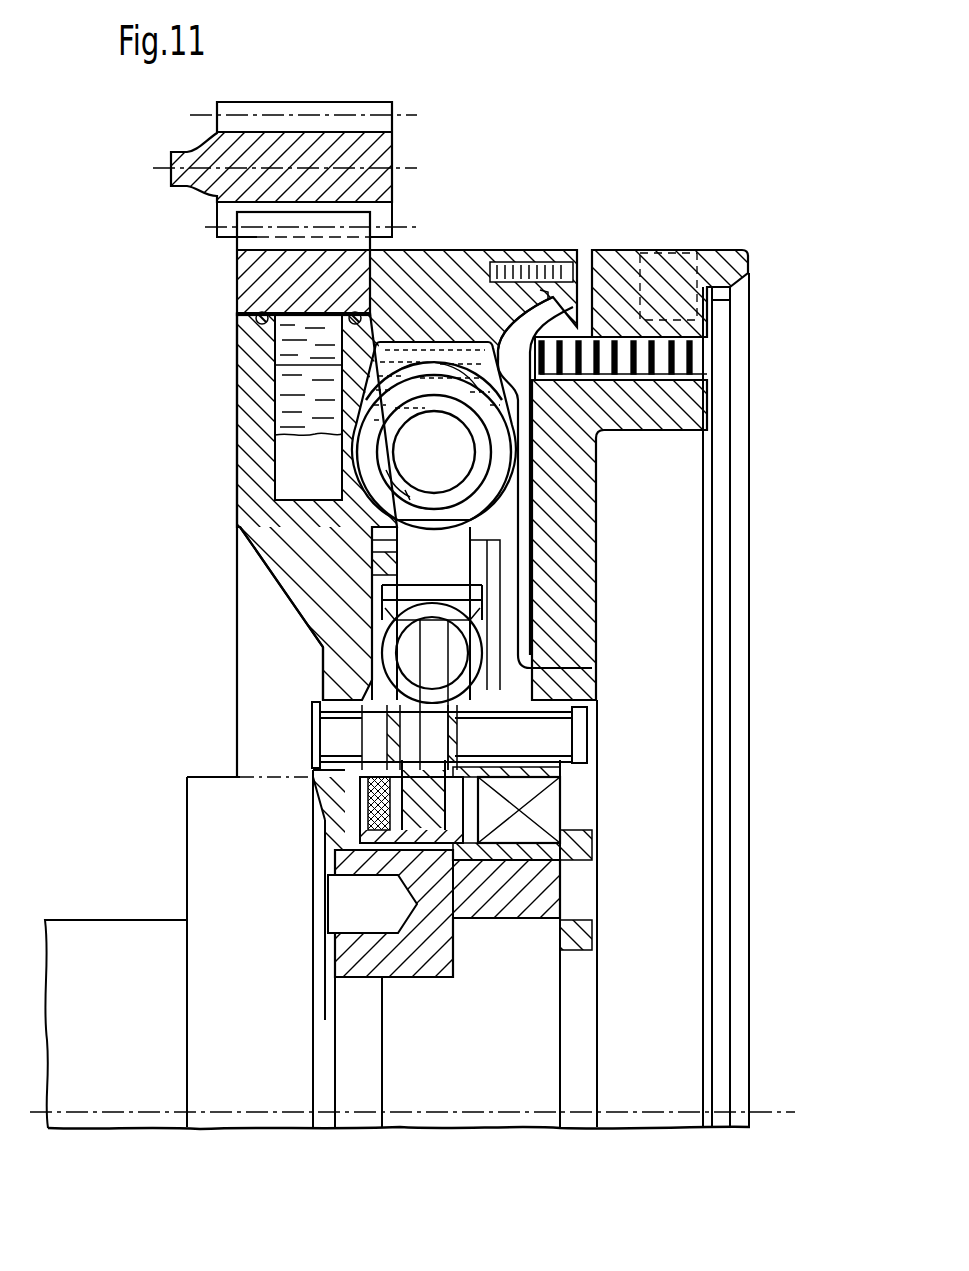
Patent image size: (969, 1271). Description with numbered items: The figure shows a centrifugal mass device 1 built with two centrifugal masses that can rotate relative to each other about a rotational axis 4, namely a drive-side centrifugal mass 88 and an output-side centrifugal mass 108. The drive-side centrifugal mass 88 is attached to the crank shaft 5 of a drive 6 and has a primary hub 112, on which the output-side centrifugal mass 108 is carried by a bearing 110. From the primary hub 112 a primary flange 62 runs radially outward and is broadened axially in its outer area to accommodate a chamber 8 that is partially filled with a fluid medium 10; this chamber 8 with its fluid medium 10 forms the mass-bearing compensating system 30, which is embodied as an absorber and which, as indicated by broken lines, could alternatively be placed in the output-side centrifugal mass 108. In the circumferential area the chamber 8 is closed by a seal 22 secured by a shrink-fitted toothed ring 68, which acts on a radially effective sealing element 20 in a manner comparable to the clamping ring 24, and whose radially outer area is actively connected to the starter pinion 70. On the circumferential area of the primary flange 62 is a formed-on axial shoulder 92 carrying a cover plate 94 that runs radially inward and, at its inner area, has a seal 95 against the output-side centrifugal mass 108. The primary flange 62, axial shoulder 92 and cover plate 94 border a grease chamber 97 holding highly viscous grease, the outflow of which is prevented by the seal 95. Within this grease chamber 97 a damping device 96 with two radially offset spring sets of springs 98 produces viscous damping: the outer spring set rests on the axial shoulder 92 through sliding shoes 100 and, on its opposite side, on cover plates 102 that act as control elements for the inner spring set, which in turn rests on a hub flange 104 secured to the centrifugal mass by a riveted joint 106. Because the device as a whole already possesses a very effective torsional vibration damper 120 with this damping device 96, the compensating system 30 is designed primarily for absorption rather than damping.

The centrifugal mass device 1 is at (560, 150).
The rotational axis 4 is at (428, 1115).
The crank shaft 5 is at (246, 1088).
The drive 6 is at (97, 1130).
The chamber 8 is at (290, 470).
The fluid medium 10 is at (262, 402).
The sealing element 20 is at (345, 322).
The seal 22 is at (345, 274).
The clamping ring 24 is at (252, 293).
The mass-bearing compensating system 30 is at (672, 286).
The primary flange 62 is at (315, 618).
The toothed ring 68 is at (253, 263).
The starter pinion 70 is at (385, 152).
The drive-side centrifugal mass 88 is at (280, 437).
The axial shoulder 92 is at (450, 338).
The cover plate 94 is at (565, 300).
The seal 95 is at (522, 660).
The damping device 96 is at (472, 527).
The grease chamber 97 is at (372, 527).
The springs 98 is at (497, 467).
The sliding shoes 100 is at (490, 343).
The cover plates 102 is at (395, 557).
The hub flange 104 is at (425, 663).
The riveted joint 106 is at (563, 730).
The output-side centrifugal mass 108 is at (748, 270).
The bearing 110 is at (542, 810).
The primary hub 112 is at (512, 1000).
The torsional vibration damper 120 is at (560, 552).